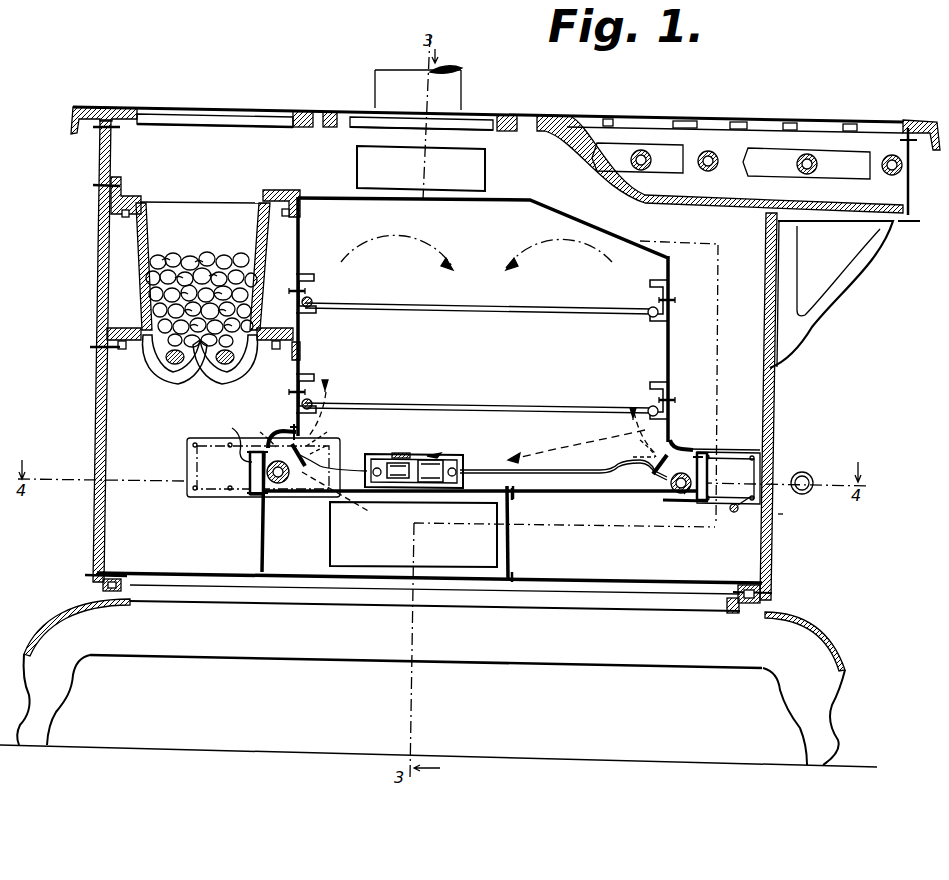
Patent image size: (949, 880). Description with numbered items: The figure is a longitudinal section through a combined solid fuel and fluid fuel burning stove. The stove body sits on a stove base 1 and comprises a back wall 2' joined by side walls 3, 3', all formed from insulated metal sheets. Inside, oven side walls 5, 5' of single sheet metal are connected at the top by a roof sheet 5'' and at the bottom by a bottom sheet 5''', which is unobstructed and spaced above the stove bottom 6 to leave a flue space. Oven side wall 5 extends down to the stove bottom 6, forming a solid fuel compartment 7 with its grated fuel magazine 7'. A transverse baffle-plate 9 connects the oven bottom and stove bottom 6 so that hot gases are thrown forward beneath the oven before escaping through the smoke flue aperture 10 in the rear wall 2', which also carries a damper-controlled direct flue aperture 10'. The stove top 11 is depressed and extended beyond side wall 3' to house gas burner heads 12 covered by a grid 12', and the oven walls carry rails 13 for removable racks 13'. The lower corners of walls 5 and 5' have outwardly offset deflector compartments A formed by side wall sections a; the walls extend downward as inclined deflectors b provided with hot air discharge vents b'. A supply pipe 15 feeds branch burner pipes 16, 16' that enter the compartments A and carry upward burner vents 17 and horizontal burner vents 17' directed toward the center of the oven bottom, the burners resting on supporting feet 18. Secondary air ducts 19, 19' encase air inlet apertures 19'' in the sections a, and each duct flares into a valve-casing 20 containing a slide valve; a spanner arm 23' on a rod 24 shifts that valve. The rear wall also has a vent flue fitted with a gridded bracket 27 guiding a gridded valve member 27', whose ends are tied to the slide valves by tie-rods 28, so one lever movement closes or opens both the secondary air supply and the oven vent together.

The stove base 1 is at (577, 612).
The back wall 2' is at (820, 304).
The side wall 3 is at (97, 355).
The side wall 3' is at (768, 413).
The oven side wall 5 is at (271, 384).
The oven side wall 5' is at (684, 349).
The roof sheet 5'' is at (483, 217).
The bottom sheet 5''' is at (481, 506).
The stove bottom 6 is at (377, 598).
The solid fuel compartment 7 is at (199, 364).
The grated fuel magazine 7' is at (203, 268).
The baffle-plate 9 is at (518, 550).
The smoke flue aperture 10 is at (413, 534).
The direct flue aperture 10' is at (444, 168).
The stove top 11 is at (531, 122).
The gas burner heads 12 is at (720, 164).
The grid 12' is at (735, 114).
The rails 13 is at (482, 346).
The racks 13' is at (478, 358).
The supply pipe 15 is at (811, 477).
The branch burner pipe 16 is at (681, 507).
The branch burner pipe 16' is at (333, 457).
The burner vents 17 is at (485, 449).
The burner vents 17' is at (479, 477).
The supporting feet 18 is at (292, 488).
The secondary air duct 19 is at (230, 439).
The secondary air duct 19' is at (724, 448).
The air inlet apertures 19'' is at (486, 486).
The valve-casing 20 is at (473, 471).
The spanner arm 23' is at (805, 517).
The rod 24 is at (733, 513).
The gridded bracket 27 is at (414, 457).
The gridded valve member 27' is at (415, 458).
The tie-rods 28 is at (489, 455).
The deflector compartments A is at (476, 408).
The side wall sections a is at (477, 432).
The deflectors b is at (481, 449).
The hot air discharge vents b' is at (480, 437).